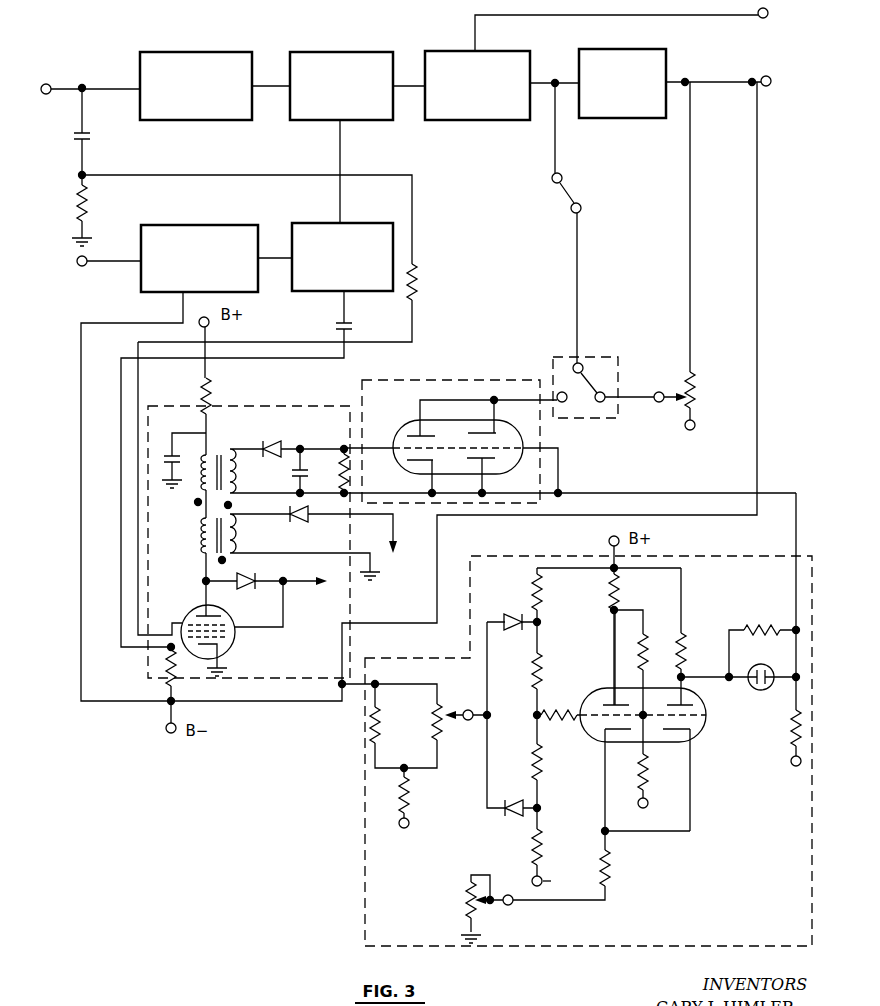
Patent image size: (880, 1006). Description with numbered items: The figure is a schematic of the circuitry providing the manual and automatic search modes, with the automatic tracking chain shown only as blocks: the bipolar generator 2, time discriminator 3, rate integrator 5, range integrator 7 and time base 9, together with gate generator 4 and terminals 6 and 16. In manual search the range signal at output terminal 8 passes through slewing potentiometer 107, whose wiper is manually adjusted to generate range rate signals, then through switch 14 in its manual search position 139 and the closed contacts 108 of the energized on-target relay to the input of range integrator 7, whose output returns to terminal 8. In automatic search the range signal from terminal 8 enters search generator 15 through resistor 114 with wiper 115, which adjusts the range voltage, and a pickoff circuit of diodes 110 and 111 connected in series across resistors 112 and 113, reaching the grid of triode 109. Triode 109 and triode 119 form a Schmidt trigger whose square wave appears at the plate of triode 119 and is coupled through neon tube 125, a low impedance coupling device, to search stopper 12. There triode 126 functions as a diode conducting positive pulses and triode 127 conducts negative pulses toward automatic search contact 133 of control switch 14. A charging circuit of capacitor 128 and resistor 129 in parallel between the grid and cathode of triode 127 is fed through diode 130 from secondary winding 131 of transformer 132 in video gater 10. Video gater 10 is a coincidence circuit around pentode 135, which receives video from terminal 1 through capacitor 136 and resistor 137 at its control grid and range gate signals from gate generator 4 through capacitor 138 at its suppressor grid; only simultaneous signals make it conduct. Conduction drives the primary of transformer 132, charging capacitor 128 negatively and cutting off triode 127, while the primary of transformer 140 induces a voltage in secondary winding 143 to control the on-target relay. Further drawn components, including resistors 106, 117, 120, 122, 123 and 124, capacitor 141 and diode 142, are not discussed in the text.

The terminal 1 is at (50, 84).
The bipolar generator 2 is at (205, 52).
The time discriminator 3 is at (339, 52).
The gate generator 4 is at (352, 223).
The rate integrator 5 is at (449, 51).
The time base input terminal 6 is at (82, 266).
The range integrator 7 is at (625, 49).
The output terminal 8 is at (772, 77).
The time base 9 is at (191, 225).
The video gater 10 is at (288, 406).
The search stopper 12 is at (447, 380).
The control switch 14 is at (587, 357).
The search generator 15 is at (585, 946).
The rate output terminal 16 is at (761, 19).
The resistor 106 is at (546, 600).
The slewing potentiometer 107 is at (697, 389).
The contacts 108 is at (569, 194).
The triode 109 is at (584, 704).
The diode 110 is at (512, 614).
The diode 111 is at (512, 820).
The resistor 112 is at (545, 668).
The resistor 113 is at (545, 770).
The resistor 114 is at (392, 772).
The wiper 115 is at (466, 722).
The resistor 117 is at (545, 846).
The triode 119 is at (684, 675).
The resistor 120 is at (650, 652).
The resistor 122 is at (688, 640).
The resistor 123 is at (612, 868).
The resistor 124 is at (661, 745).
The neon tube 125 is at (761, 690).
The triode 126 is at (525, 437).
The triode 127 is at (407, 431).
The capacitor 128 is at (310, 472).
The resistor 129 is at (350, 478).
The diode 130 is at (285, 446).
The secondary winding 131 is at (241, 479).
The transformer 132 is at (212, 456).
The automatic search contact 133 is at (558, 392).
The pentode 135 is at (232, 646).
The capacitor 136 is at (90, 139).
The resistor 137 is at (418, 276).
The capacitor 138 is at (352, 327).
The manual search position 139 is at (607, 392).
The transformer 140 is at (206, 553).
The capacitor 141 is at (205, 460).
The diode 142 is at (244, 592).
The secondary winding 143 is at (242, 537).